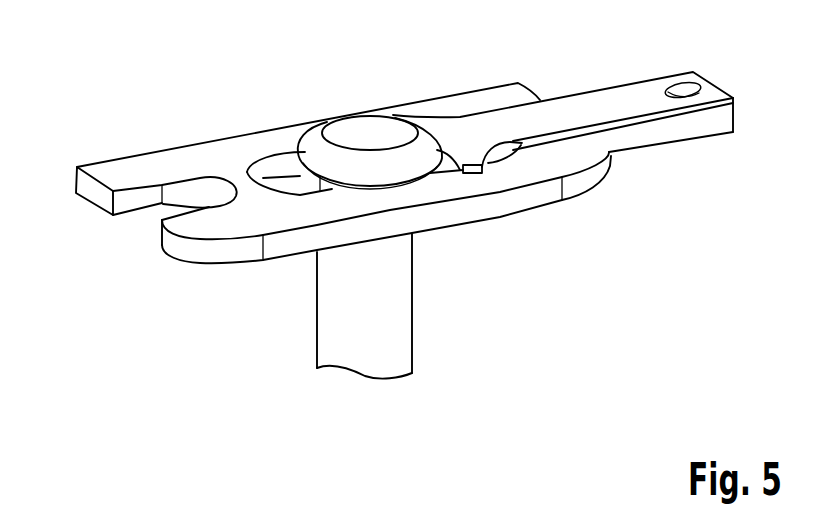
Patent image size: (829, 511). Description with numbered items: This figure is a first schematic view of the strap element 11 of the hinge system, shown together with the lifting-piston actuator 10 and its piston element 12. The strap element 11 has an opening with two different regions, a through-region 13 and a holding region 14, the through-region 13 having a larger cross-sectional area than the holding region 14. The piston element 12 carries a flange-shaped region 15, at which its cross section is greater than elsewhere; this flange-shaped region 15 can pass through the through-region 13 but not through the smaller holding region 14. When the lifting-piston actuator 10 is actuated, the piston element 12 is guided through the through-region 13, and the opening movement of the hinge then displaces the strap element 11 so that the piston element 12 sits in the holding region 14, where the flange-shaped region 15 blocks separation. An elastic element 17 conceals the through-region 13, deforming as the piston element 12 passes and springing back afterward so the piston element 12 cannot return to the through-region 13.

The lifting-piston actuator 10 is at (290, 345).
The strap element 11 is at (84, 133).
The piston element 12 is at (390, 337).
The through-region 13 is at (504, 143).
The holding region 14 is at (279, 150).
The flange-shaped region 15 is at (348, 130).
The elastic element 17 is at (602, 98).